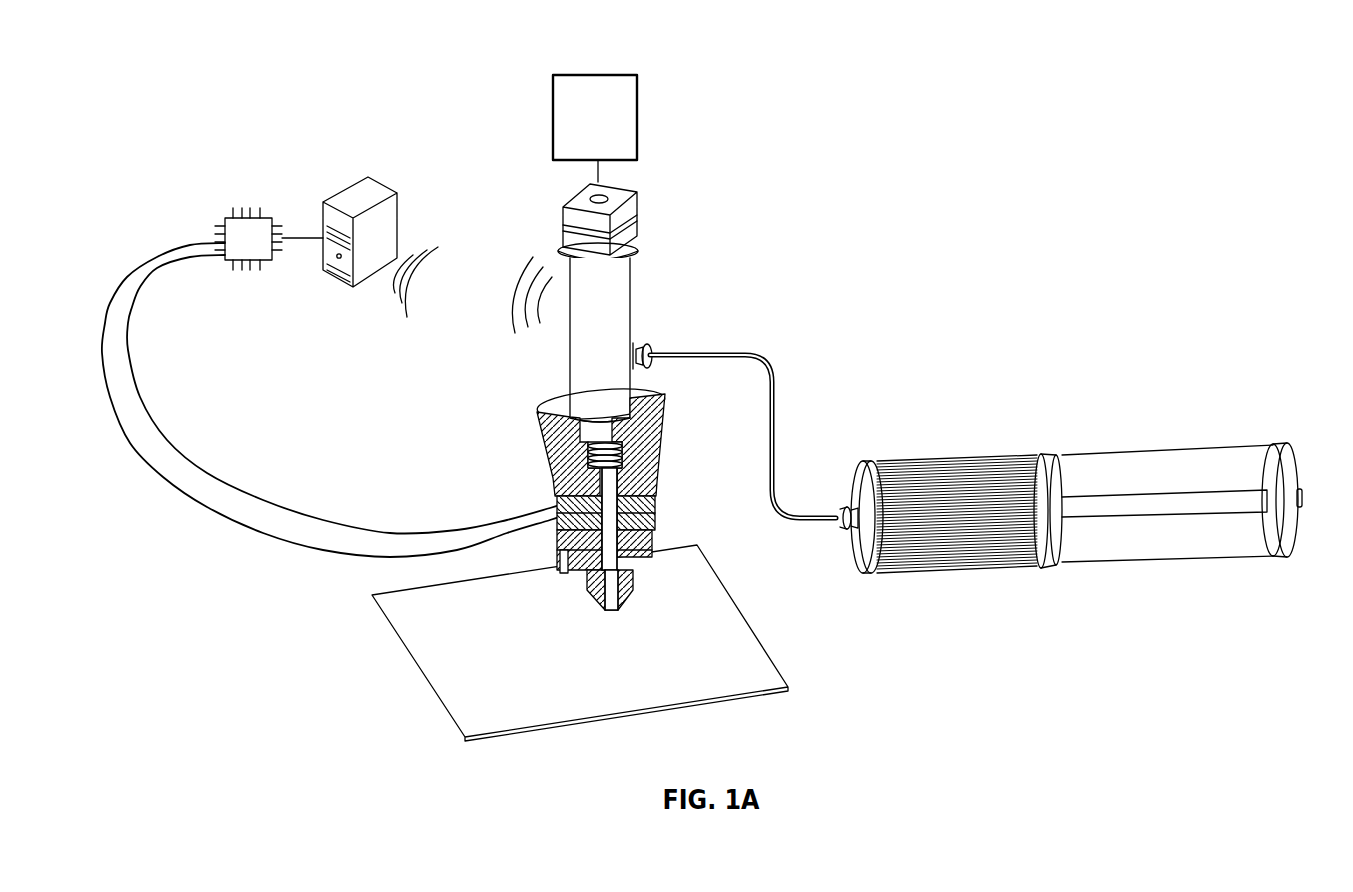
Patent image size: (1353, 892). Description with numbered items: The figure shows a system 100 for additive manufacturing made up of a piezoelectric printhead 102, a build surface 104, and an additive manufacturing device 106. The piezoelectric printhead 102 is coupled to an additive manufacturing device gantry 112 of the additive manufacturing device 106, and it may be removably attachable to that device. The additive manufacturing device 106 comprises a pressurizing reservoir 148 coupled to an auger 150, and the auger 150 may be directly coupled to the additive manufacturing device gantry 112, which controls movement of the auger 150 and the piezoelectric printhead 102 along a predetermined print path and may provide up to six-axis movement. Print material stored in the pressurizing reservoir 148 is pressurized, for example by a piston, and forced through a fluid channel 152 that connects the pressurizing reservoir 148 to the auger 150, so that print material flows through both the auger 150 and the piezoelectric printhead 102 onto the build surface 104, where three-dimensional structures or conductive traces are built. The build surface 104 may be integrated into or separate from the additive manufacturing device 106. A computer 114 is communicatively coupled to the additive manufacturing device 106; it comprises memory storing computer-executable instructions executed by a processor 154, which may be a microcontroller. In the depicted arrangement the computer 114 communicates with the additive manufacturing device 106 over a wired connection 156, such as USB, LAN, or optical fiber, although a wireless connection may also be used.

The system for additive manufacturing 100 is at (187, 90).
The piezoelectric printhead 102 is at (670, 503).
The build surface 104 is at (450, 673).
The additive manufacturing device 106 is at (687, 397).
The additive manufacturing device gantry 112 is at (637, 133).
The computer 114 is at (399, 228).
The pressurizing reservoir 148 is at (1097, 505).
The auger 150 is at (630, 278).
The fluid channel 152 is at (760, 356).
The processor 154 is at (250, 208).
The wired connection 156 is at (198, 437).